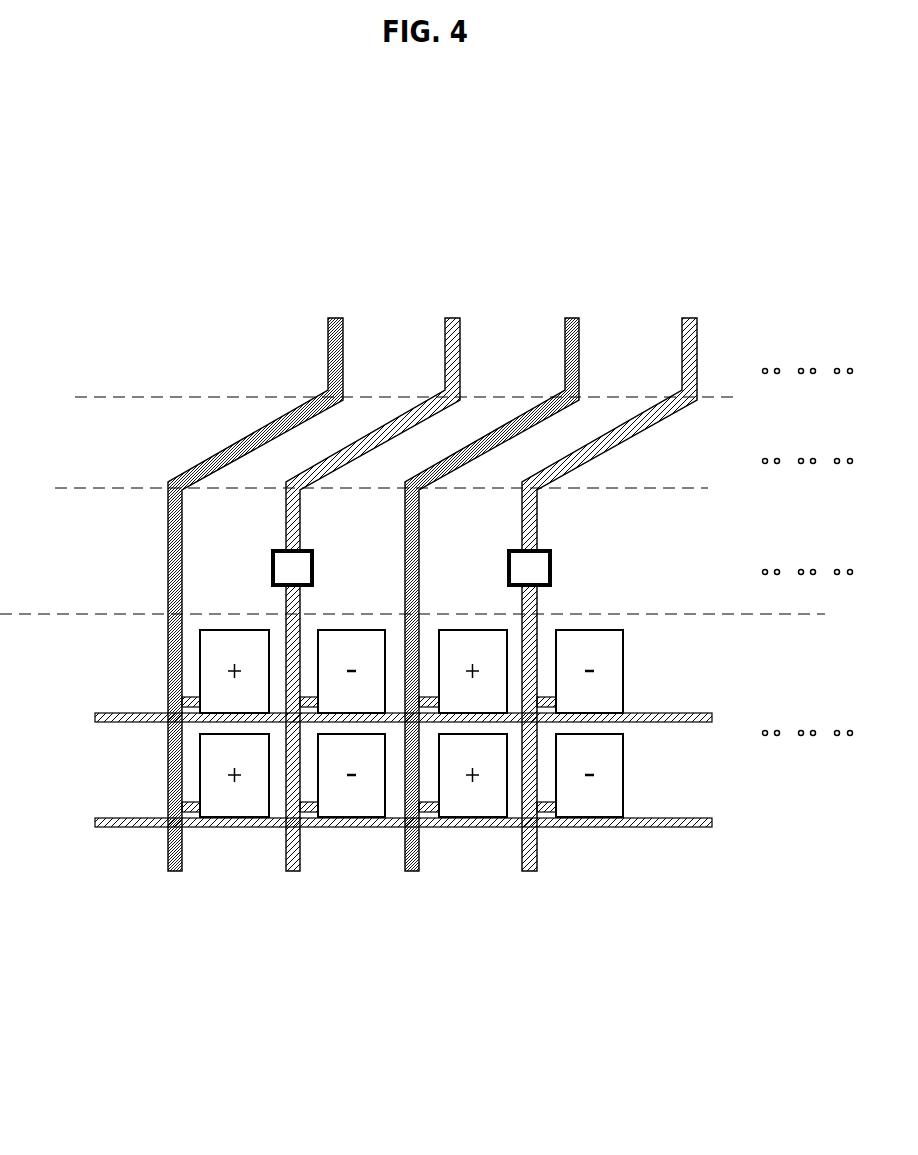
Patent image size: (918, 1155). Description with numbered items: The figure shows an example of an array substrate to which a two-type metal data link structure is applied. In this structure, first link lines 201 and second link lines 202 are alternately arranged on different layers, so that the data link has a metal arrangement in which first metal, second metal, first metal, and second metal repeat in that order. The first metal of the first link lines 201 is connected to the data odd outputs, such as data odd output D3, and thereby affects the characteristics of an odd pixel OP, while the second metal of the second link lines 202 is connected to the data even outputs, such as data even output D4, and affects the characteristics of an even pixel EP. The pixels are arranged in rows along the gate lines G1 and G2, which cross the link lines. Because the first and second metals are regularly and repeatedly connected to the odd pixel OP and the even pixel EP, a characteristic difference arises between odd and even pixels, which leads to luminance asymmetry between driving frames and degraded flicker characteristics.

The first link line 201 is at (328, 352).
The second link line 202 is at (455, 372).
The data odd output D3 is at (495, 577).
The data even output D4 is at (606, 577).
The first gate line G1 is at (382, 715).
The second gate line G2 is at (382, 818).
The odd pixel OP is at (233, 827).
The even pixel EP is at (352, 827).